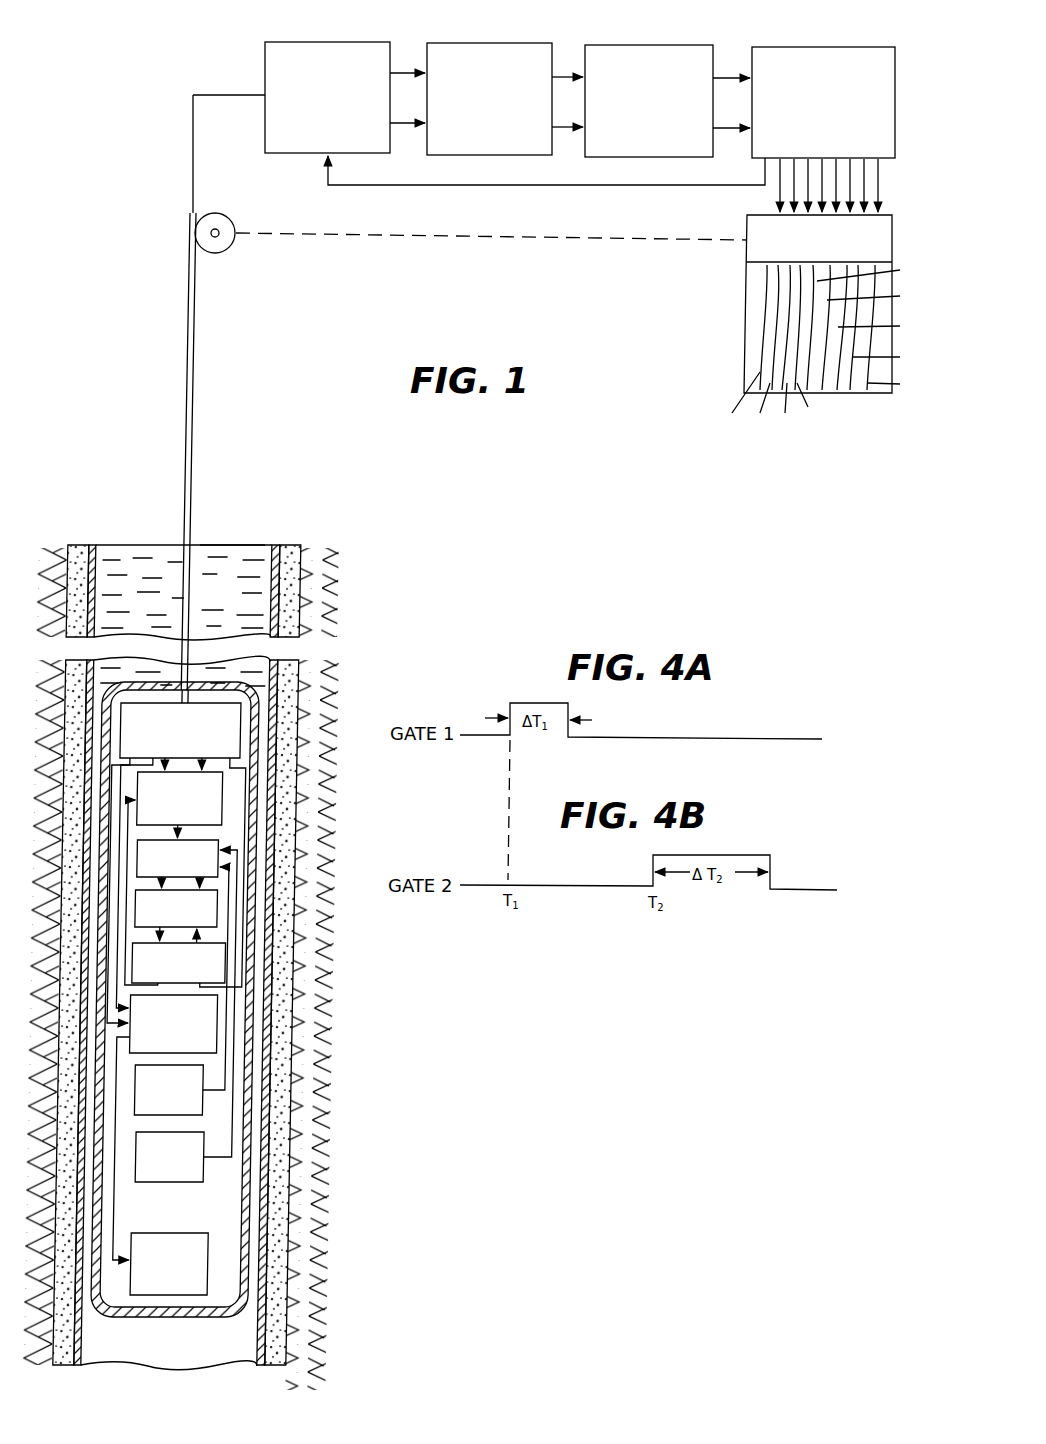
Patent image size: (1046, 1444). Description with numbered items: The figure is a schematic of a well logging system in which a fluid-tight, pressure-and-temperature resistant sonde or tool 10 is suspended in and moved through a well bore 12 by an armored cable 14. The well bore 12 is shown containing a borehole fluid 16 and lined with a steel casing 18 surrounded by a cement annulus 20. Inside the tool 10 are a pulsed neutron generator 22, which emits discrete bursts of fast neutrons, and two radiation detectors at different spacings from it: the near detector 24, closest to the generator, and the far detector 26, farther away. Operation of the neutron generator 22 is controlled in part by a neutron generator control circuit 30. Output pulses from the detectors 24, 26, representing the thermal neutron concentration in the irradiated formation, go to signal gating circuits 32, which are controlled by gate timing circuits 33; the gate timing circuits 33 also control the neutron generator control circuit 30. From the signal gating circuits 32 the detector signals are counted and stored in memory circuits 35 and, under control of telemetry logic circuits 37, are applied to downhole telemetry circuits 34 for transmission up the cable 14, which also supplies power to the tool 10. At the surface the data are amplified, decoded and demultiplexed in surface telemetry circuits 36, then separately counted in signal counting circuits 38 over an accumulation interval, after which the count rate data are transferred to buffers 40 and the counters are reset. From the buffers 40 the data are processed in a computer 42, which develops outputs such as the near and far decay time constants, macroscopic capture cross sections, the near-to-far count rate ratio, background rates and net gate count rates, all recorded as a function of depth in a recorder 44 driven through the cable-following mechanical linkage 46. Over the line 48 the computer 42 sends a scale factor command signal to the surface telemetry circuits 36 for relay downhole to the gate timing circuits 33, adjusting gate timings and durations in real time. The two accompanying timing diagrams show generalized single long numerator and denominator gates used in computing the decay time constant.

The tool 10 is at (265, 680).
The well bore 12 is at (235, 543).
The armored cable 14 is at (195, 428).
The borehole fluid 16 is at (235, 602).
The steel casing 18 is at (278, 689).
The cement annulus 20 is at (290, 777).
The pulsed neutron generator 22 is at (214, 1275).
The near detector 24 is at (209, 1170).
The far detector 26 is at (208, 1080).
The neutron generator control circuit 30 is at (216, 1024).
The signal gating circuits 32 is at (218, 850).
The gate timing circuits 33 is at (220, 800).
The downhole telemetry circuits 34 is at (242, 728).
The memory circuits 35 is at (218, 913).
The surface telemetry circuits 36 is at (333, 44).
The telemetry logic circuits 37 is at (228, 965).
The signal counting circuits 38 is at (497, 45).
The buffers 40 is at (661, 46).
The computer 42 is at (836, 49).
The recorder 44 is at (747, 252).
The cable-following mechanical linkage 46 is at (435, 240).
The scale factor command signal line 48 is at (375, 180).